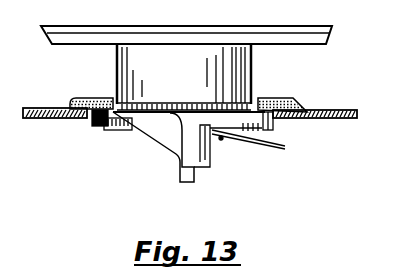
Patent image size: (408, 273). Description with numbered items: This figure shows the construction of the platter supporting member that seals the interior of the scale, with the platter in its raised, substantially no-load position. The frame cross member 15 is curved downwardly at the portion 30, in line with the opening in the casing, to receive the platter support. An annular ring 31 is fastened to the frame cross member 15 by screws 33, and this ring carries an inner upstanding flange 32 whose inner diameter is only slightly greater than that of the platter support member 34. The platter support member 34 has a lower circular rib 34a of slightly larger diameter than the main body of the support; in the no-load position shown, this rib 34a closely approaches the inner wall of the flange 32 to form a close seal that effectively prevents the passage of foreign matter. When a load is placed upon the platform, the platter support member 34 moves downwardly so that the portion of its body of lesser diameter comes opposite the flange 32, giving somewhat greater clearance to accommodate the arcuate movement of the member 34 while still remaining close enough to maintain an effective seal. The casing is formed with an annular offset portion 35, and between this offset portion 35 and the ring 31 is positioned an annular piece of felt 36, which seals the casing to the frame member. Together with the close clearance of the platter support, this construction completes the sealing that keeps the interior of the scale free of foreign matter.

The cross member 15 is at (45, 118).
The downwardly curved portion 30 is at (277, 128).
The annular ring 31 is at (260, 133).
The inner upstanding flange 32 is at (113, 98).
The screws 33 is at (92, 118).
The platter support member 34 is at (256, 68).
The lower circular rib 34a is at (259, 96).
The annular offset portion 35 is at (70, 105).
The annular felt piece 36 is at (304, 103).